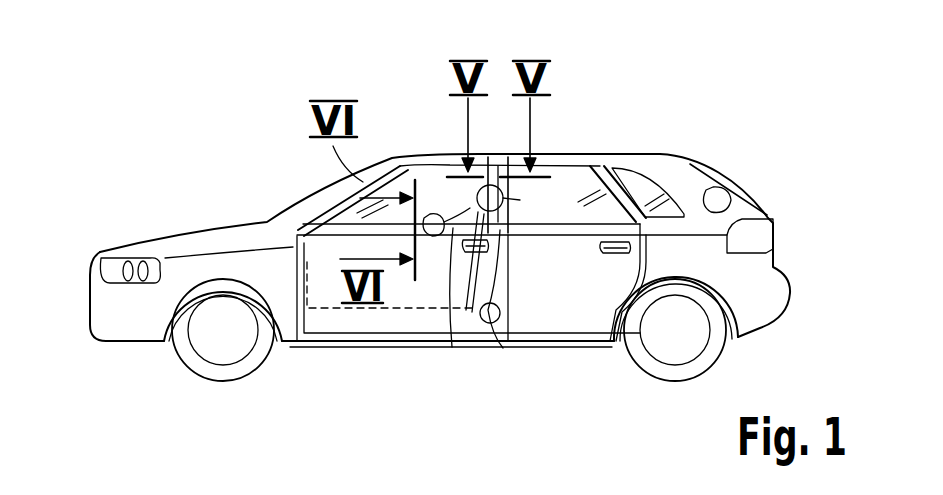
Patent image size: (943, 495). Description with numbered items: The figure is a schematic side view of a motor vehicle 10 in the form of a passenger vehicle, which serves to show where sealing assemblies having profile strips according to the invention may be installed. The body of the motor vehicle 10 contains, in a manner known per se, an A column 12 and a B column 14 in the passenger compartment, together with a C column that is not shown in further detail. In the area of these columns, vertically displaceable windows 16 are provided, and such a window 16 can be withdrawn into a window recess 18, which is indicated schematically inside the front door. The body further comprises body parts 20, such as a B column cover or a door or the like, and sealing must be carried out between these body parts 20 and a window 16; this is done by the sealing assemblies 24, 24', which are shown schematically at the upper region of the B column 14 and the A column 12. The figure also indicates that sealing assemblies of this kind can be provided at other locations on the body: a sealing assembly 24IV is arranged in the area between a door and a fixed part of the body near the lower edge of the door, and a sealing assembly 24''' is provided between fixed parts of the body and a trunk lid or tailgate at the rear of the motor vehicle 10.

The motor vehicle 10 is at (676, 106).
The A column 12 is at (312, 195).
The B column 14 is at (513, 205).
The window 16 is at (455, 330).
The window recess 18 is at (403, 318).
The body part 20 is at (543, 197).
The sealing assembly 24 is at (469, 152).
The sealing assembly 24' is at (421, 165).
The sealing assembly 24''' is at (742, 157).
The sealing assembly 24IV is at (498, 322).